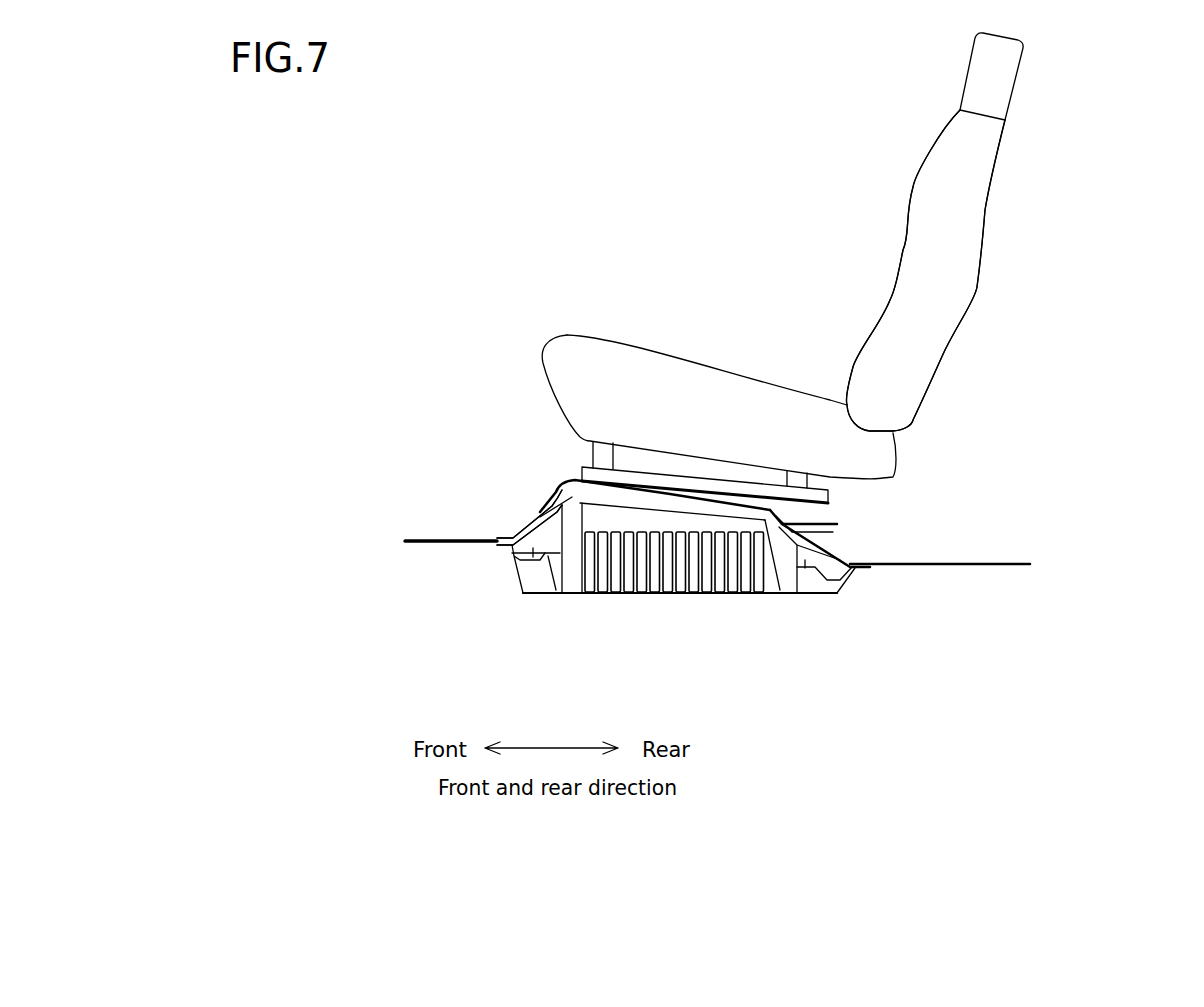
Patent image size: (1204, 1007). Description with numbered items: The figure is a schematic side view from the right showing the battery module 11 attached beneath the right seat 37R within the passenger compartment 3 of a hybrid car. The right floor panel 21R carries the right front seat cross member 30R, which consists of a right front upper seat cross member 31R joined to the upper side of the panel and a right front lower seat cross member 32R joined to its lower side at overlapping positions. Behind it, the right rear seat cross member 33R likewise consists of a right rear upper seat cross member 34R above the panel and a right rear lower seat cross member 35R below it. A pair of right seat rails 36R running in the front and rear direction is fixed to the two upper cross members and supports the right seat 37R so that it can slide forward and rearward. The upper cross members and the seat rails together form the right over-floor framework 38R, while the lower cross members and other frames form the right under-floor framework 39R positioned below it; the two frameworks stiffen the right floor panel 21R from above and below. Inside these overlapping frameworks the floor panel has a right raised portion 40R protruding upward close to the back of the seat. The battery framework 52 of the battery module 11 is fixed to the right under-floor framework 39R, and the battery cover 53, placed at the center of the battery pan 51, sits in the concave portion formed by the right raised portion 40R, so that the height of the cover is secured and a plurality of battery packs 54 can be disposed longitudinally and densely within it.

The passenger compartment 3 is at (762, 152).
The right seat 37R is at (980, 284).
The right seat rails 36R is at (837, 498).
The right front seat cross member 30R is at (367, 432).
The right front upper seat cross member 31R is at (545, 525).
The right front lower seat cross member 32R is at (550, 545).
The right over-floor framework 38R is at (476, 524).
The right under-floor framework 39R is at (489, 566).
The battery framework 52 is at (490, 603).
The right raised portion 40R is at (643, 519).
The battery cover 53 is at (710, 520).
The battery pack 54 is at (758, 600).
The battery pan 51 is at (780, 600).
The right rear upper seat cross member 34R is at (837, 523).
The right rear lower seat cross member 35R is at (797, 553).
The right rear seat cross member 33R is at (1077, 494).
The right floor panel 21R is at (995, 567).
The battery module 11 is at (845, 731).